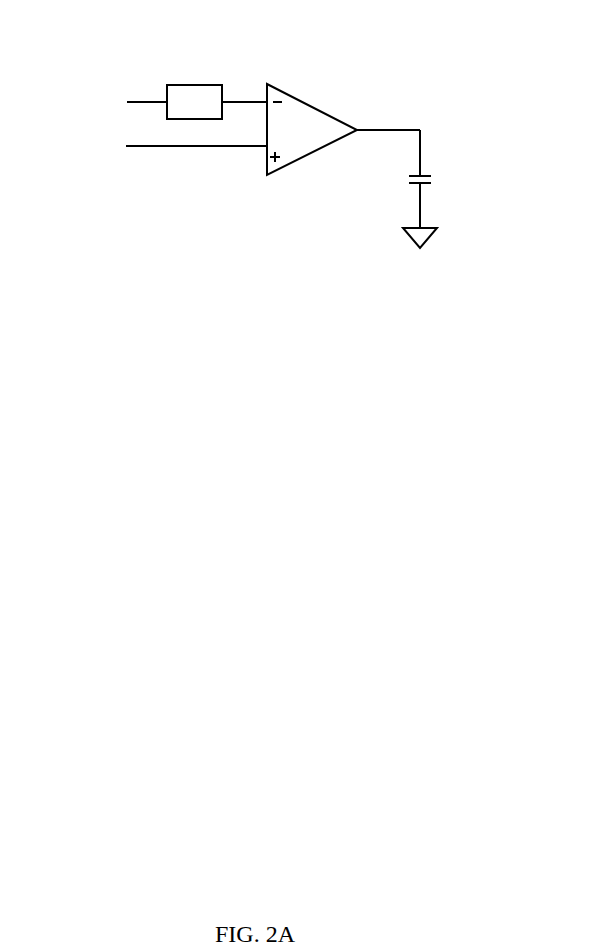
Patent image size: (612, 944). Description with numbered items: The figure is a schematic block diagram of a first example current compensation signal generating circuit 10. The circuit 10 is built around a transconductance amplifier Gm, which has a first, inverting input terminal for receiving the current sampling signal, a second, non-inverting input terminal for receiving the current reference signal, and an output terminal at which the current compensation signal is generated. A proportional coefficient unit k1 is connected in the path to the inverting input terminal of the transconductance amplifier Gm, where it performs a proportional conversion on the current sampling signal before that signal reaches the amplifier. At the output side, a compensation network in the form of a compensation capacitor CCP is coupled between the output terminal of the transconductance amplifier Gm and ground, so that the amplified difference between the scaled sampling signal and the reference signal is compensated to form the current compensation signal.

The current compensation signal generating circuit 10 is at (244, 140).
The proportional coefficient unit k1 is at (194, 102).
The transconductance amplifier Gm is at (312, 129).
The compensation capacitor CCP is at (400, 176).